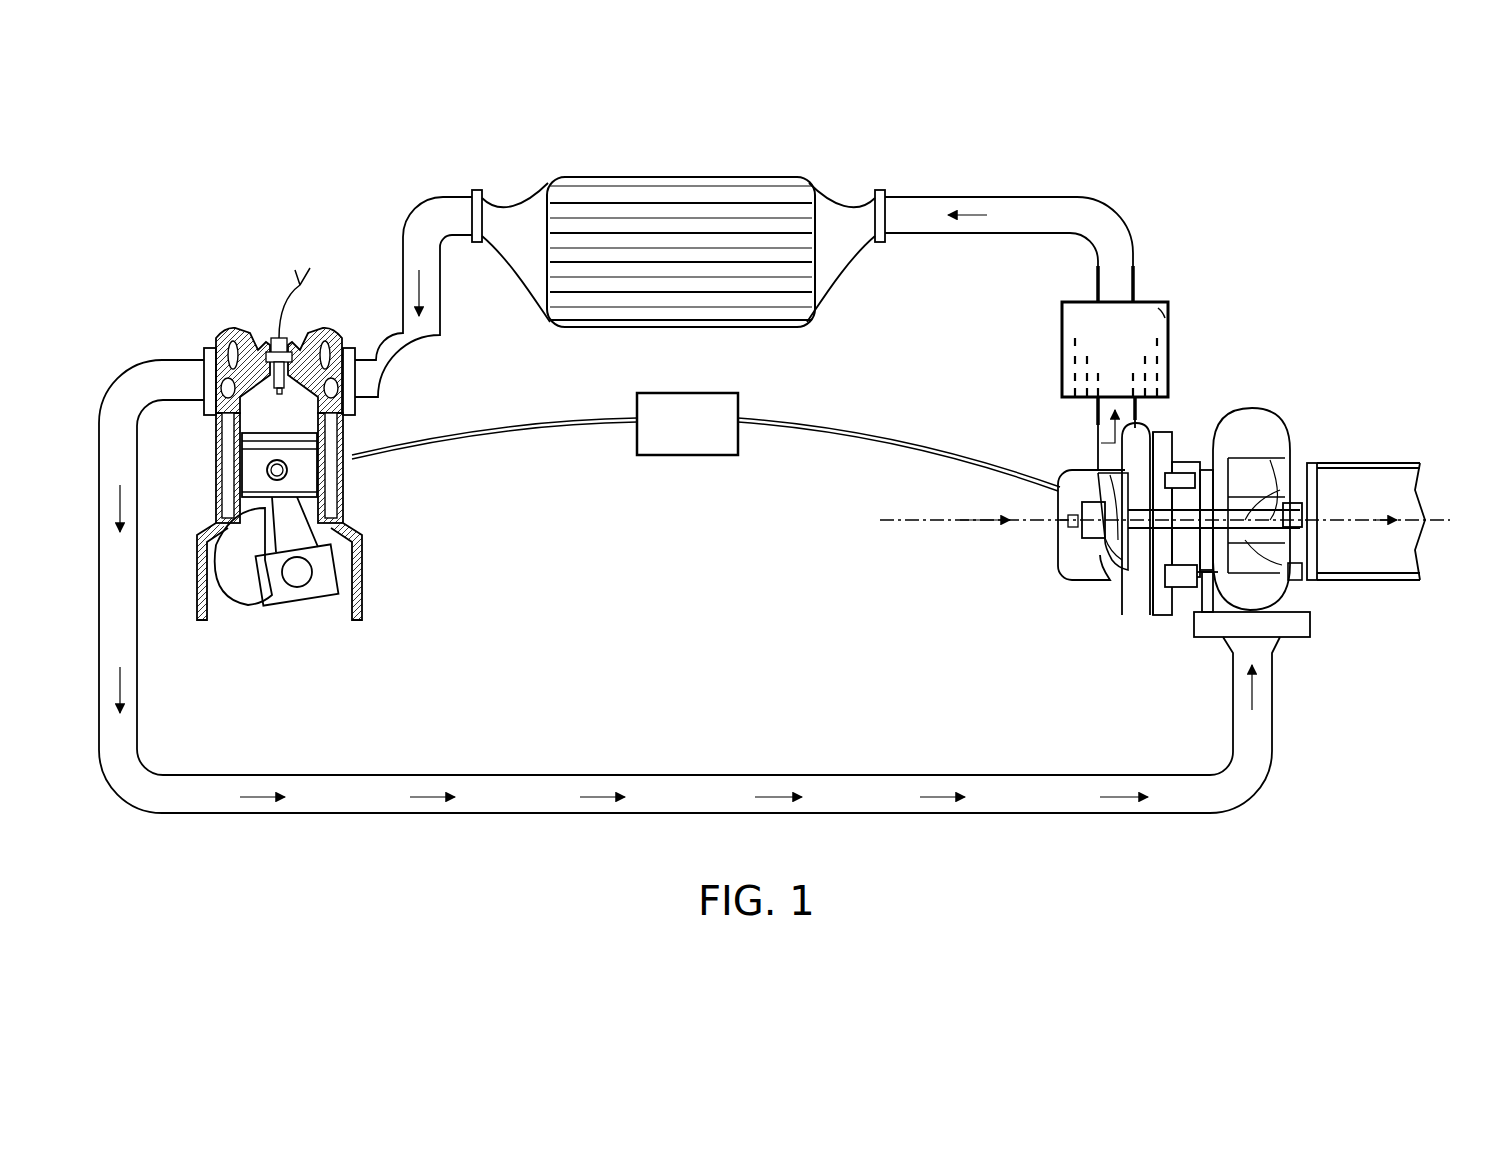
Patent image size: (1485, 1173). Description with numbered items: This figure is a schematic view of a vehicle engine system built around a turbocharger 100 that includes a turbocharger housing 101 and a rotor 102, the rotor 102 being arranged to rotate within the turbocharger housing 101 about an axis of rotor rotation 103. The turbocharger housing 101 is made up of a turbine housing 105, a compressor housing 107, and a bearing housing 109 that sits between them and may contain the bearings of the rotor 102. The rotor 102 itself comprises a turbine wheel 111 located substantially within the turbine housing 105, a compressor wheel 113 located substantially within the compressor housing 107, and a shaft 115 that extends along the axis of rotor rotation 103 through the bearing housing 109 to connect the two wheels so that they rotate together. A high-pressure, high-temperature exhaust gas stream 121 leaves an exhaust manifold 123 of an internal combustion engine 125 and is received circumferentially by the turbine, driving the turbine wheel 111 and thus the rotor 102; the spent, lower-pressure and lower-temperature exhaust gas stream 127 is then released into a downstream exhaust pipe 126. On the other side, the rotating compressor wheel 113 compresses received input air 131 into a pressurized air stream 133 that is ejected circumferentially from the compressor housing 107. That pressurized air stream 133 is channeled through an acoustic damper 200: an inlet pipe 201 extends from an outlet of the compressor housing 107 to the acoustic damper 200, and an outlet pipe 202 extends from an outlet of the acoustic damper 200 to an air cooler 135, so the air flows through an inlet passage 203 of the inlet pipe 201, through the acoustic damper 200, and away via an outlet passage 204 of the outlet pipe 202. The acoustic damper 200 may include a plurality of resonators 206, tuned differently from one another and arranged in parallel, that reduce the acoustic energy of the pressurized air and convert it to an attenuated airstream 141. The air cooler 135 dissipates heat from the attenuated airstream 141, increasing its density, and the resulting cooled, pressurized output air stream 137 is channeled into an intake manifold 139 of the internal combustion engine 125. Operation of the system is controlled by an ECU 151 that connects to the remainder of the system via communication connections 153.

The turbocharger 100 is at (1256, 332).
The turbocharger housing 101 is at (1180, 420).
The rotor 102 is at (1158, 530).
The axis of rotor rotation 103 is at (1433, 518).
The turbine housing 105 is at (1255, 425).
The compressor housing 107 is at (1085, 590).
The bearing housing 109 is at (1180, 470).
The turbine wheel 111 is at (1242, 505).
The compressor wheel 113 is at (1102, 565).
The shaft 115 is at (1192, 522).
The exhaust gas stream 121 is at (770, 797).
The exhaust manifold 123 is at (226, 360).
The internal combustion engine 125 is at (308, 478).
The downstream exhaust pipe 126 is at (1375, 462).
The exhaust gas stream 127 is at (1353, 515).
The input air 131 is at (967, 522).
The pressurized air stream 133 is at (1103, 443).
The air cooler 135 is at (680, 203).
The output air stream 137 is at (410, 292).
The intake manifold 139 is at (340, 392).
The attenuated airstream 141 is at (980, 215).
The ECU 151 is at (688, 455).
The communication connections 153 is at (828, 437).
The acoustic damper 200 is at (1057, 355).
The inlet pipe 201 is at (1095, 425).
The outlet pipe 202 is at (1136, 272).
The inlet passage 203 is at (1106, 457).
The outlet passage 204 is at (1108, 292).
The resonators 206 is at (1160, 320).